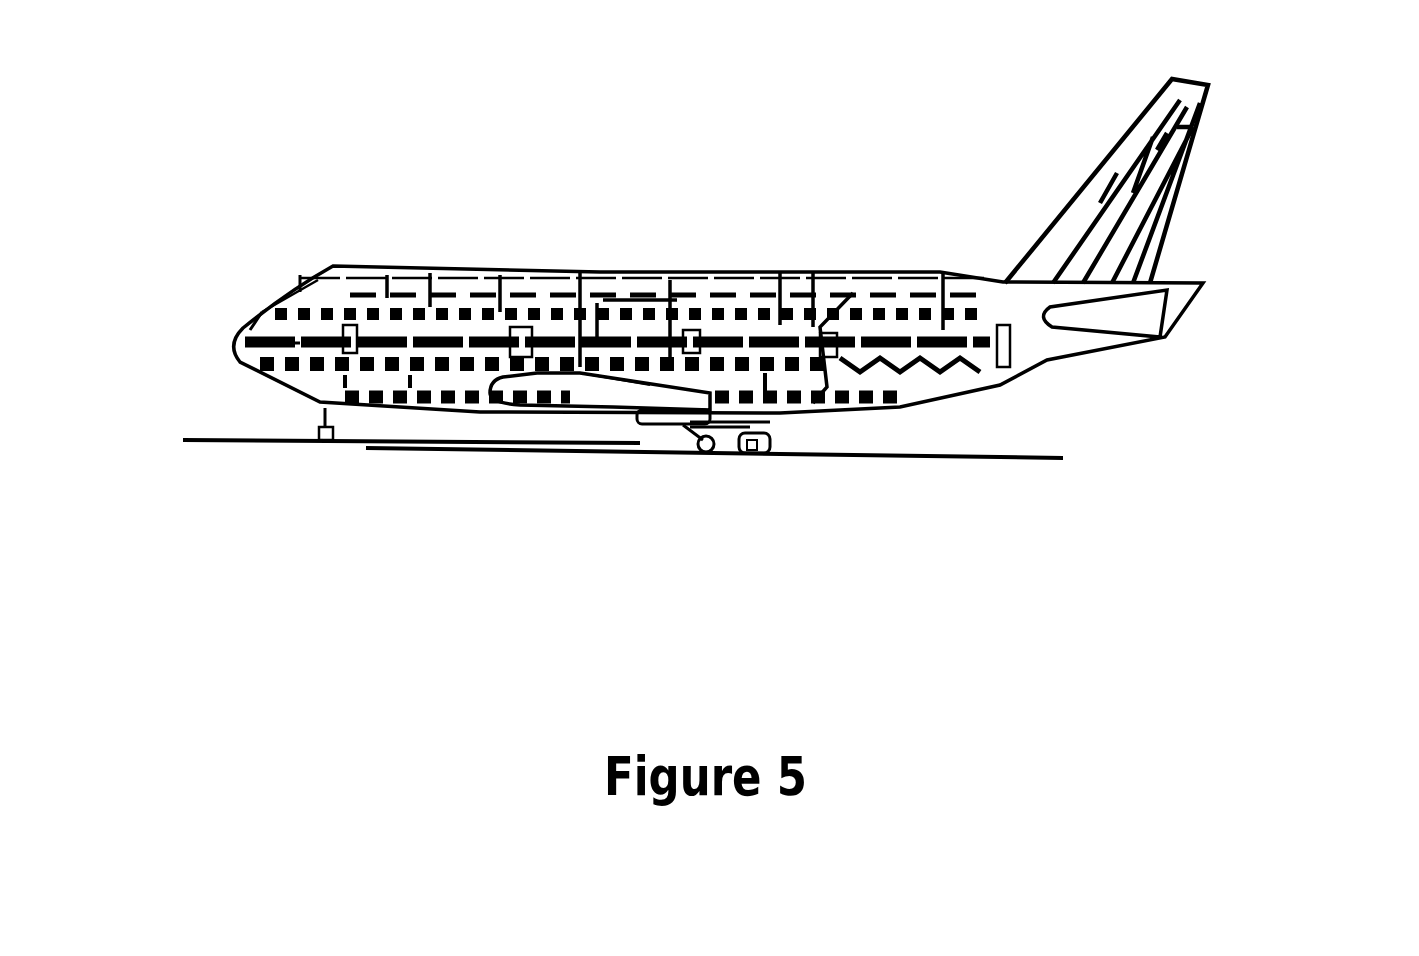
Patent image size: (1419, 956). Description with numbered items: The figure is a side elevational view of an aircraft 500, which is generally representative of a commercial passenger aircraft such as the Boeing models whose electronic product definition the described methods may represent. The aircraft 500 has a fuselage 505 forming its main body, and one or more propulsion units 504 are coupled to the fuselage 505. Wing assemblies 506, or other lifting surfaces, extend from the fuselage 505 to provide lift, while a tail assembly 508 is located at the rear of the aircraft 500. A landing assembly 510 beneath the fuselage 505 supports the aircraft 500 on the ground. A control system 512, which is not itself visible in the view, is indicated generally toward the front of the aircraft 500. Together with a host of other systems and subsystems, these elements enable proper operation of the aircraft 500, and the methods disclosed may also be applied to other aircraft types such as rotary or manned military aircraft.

The aircraft 500 is at (353, 183).
The propulsion unit 504 is at (513, 407).
The fuselage 505 is at (620, 277).
The wing assembly 506 is at (628, 413).
The tail assembly 508 is at (1228, 158).
The landing assembly 510 is at (758, 500).
The control system 512 is at (260, 277).